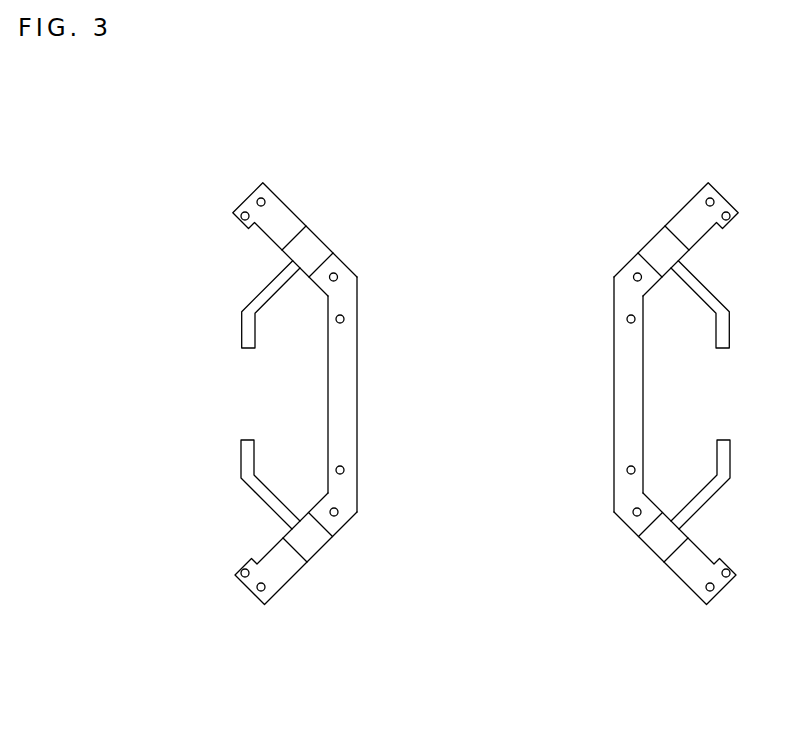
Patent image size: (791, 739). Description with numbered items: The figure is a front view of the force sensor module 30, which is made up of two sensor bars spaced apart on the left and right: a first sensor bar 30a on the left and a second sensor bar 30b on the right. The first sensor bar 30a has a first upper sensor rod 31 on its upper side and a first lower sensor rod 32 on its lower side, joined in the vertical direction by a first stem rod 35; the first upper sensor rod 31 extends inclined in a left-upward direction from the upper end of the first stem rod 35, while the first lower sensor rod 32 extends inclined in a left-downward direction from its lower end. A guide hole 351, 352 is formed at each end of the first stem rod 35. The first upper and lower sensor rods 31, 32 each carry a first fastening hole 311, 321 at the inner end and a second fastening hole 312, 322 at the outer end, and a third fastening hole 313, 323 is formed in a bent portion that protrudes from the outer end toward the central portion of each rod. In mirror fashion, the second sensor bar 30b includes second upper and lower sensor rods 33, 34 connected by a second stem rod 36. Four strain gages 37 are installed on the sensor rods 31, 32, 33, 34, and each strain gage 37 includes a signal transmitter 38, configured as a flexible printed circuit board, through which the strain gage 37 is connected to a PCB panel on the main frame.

The force sensor module 30 is at (74, 91).
The first sensor bar 30a is at (302, 650).
The second sensor bar 30b is at (717, 650).
The first upper sensor rod 31 is at (257, 244).
The first fastening hole 311 is at (338, 273).
The second fastening hole 312 is at (261, 198).
The third fastening hole 313 is at (241, 214).
The first lower sensor rod 32 is at (253, 539).
The first fastening hole 321 is at (338, 511).
The second fastening hole 322 is at (257, 589).
The third fastening hole 323 is at (241, 573).
The second upper sensor rod 33 is at (675, 191).
The second lower sensor rod 34 is at (673, 597).
The first stem rod 35 is at (330, 390).
The guide hole 351 is at (345, 317).
The guide hole 352 is at (346, 466).
The second stem rod 36 is at (644, 394).
The strain gage 37 is at (309, 250).
The signal transmitter 38 is at (246, 331).